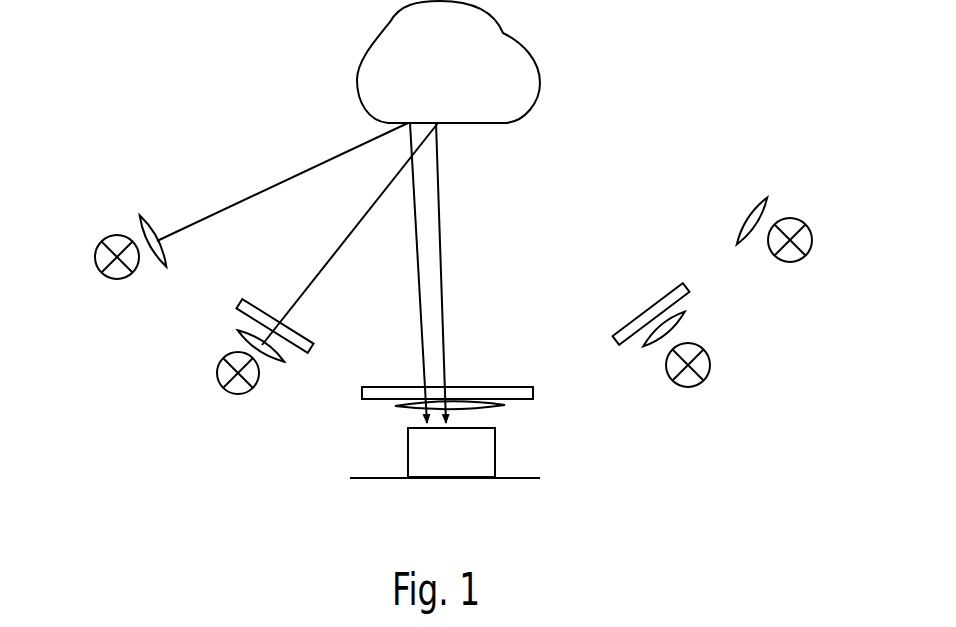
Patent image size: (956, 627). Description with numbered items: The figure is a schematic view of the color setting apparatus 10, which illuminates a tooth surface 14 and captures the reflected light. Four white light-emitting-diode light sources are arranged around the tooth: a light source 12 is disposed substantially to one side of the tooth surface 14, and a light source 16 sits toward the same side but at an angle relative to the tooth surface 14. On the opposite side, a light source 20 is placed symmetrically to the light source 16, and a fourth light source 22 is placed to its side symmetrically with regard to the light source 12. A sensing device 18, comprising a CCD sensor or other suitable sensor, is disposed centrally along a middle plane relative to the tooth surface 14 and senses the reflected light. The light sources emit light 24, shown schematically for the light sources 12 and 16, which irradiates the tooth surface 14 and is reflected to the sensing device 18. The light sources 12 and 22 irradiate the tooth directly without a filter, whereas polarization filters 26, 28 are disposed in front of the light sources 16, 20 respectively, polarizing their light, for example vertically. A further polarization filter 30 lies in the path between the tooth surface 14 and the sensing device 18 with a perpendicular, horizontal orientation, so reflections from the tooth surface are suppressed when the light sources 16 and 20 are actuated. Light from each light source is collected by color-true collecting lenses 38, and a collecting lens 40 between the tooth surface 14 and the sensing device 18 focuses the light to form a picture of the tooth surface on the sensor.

The color setting apparatus 10 is at (686, 97).
The light source 12 is at (113, 273).
The tooth surface 14 is at (488, 126).
The light source 16 is at (238, 394).
The sensing device 18 is at (485, 426).
The light source 20 is at (693, 381).
The fourth light source 22 is at (793, 253).
The light 24 is at (338, 250).
The polarization filter 26 is at (307, 352).
The polarization filter 28 is at (685, 294).
The polarization filter 30 is at (520, 387).
The collecting lenses 38 is at (147, 222).
The collecting lens 40 is at (411, 408).